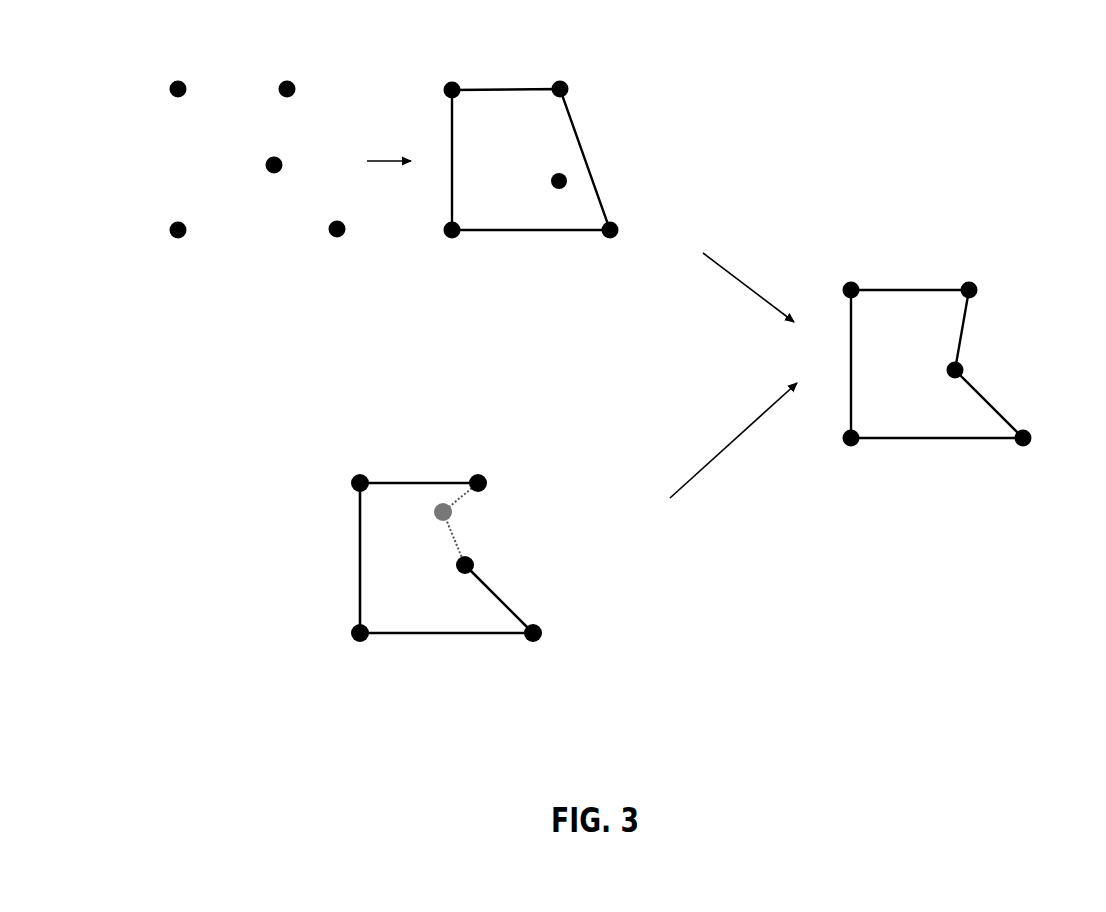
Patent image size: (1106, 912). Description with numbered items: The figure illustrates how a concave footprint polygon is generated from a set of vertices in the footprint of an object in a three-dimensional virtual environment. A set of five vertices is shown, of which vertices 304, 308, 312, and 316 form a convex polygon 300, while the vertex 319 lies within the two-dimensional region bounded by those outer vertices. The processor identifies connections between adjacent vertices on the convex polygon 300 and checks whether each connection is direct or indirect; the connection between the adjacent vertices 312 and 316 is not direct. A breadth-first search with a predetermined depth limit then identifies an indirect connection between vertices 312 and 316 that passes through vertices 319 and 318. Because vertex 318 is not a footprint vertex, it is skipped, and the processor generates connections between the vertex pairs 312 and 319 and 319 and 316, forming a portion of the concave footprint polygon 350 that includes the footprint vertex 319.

The convex polygon 300 is at (538, 276).
The concave footprint polygon 350 is at (931, 475).
The vertex 304 is at (447, 85).
The vertex 316 is at (568, 88).
The vertex 312 is at (619, 228).
The vertex 308 is at (450, 239).
The footprint vertex 319 is at (552, 183).
The vertex 318 is at (435, 517).